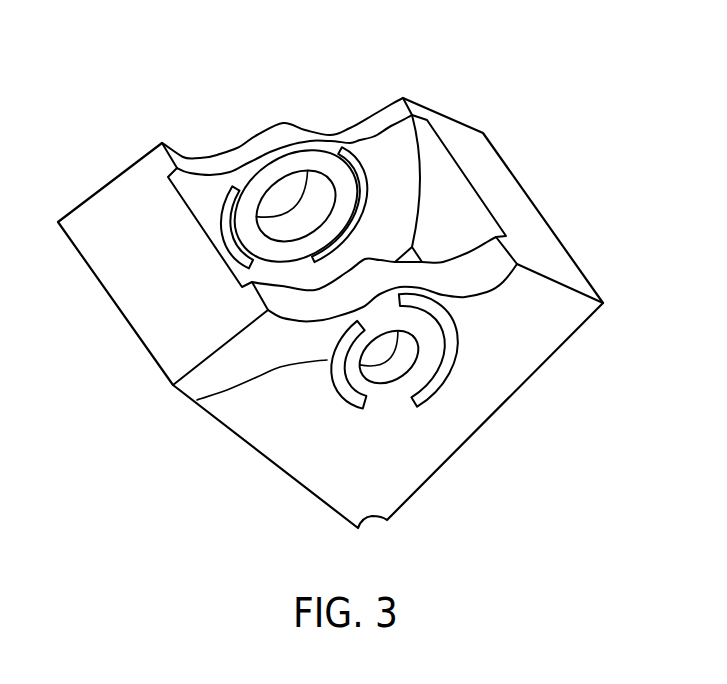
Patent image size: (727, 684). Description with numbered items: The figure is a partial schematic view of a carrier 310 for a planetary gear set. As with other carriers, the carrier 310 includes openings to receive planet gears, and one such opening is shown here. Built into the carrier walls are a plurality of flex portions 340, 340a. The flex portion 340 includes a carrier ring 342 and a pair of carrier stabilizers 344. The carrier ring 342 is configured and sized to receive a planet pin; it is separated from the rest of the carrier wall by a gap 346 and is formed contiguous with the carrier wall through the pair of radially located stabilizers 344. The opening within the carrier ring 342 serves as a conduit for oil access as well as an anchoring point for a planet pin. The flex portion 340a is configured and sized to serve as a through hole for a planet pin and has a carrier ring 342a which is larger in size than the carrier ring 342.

The carrier 310 is at (522, 204).
The flex portion 340 is at (387, 398).
The flex portion 340a is at (283, 164).
The carrier ring 342 is at (425, 362).
The carrier ring 342a is at (250, 211).
The carrier stabilizers 344 is at (377, 413).
The gap 346 is at (197, 400).